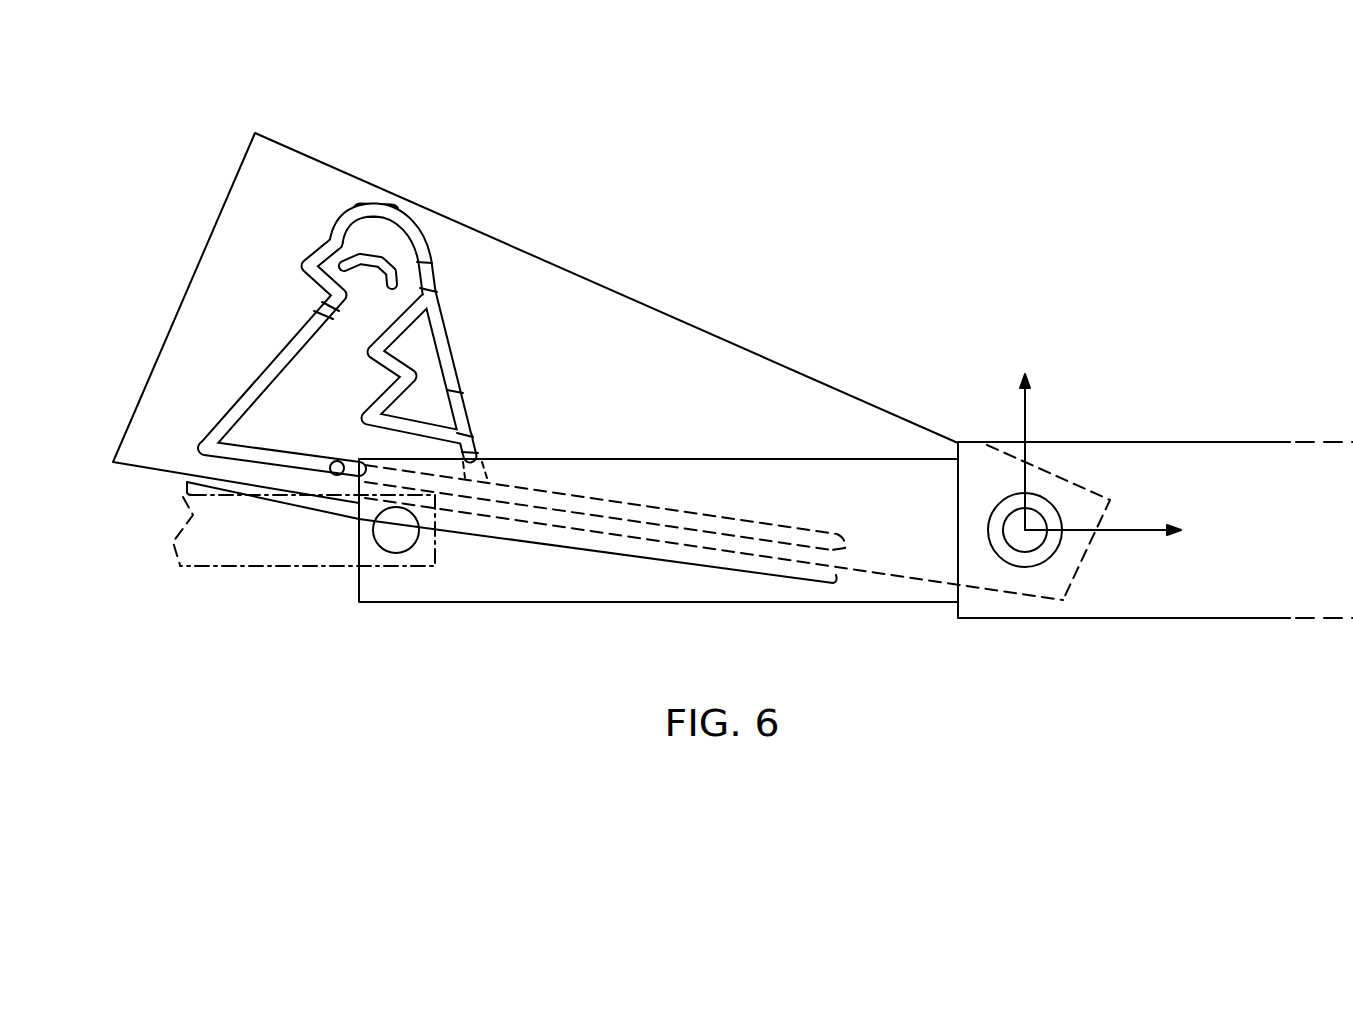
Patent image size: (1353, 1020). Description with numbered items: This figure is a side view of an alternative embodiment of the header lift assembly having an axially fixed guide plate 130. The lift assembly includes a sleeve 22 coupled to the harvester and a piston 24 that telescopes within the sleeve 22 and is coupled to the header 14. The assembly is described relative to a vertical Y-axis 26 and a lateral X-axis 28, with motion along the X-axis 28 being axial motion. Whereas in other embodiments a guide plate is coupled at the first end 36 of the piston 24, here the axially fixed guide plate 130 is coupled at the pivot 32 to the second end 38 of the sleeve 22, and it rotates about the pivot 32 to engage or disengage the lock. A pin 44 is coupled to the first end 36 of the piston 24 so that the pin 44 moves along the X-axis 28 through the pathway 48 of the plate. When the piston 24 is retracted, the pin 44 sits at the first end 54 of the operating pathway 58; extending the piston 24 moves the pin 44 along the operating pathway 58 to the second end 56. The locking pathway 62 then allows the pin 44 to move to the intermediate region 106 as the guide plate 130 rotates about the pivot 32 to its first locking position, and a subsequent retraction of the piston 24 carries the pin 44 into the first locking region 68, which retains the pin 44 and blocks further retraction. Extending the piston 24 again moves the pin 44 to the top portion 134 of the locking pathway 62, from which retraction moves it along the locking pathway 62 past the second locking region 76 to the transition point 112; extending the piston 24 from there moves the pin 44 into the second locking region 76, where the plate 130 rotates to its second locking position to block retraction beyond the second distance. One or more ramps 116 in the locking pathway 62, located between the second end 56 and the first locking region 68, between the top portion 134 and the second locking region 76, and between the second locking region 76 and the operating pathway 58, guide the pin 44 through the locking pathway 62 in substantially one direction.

The header 14 is at (193, 570).
The sleeve 22 is at (1172, 608).
The piston 24 is at (687, 470).
The Y-axis 26 is at (1028, 413).
The X-axis 28 is at (1140, 530).
The pivot 32 is at (1031, 543).
The first end 36 is at (345, 594).
The second end 38 is at (933, 620).
The pin 44 is at (330, 468).
The pathway 48 is at (755, 528).
The first end 54 is at (838, 536).
The second end 56 is at (328, 280).
The operating pathway 58 is at (583, 557).
The locking pathway 62 is at (272, 345).
The first locking region 68 is at (382, 251).
The second locking region 76 is at (417, 369).
The intermediate region 106 is at (368, 271).
The transition point 112 is at (449, 374).
The ramps 116 is at (322, 303).
The axially fixed guide plate 130 is at (832, 388).
The top portion 134 is at (376, 210).